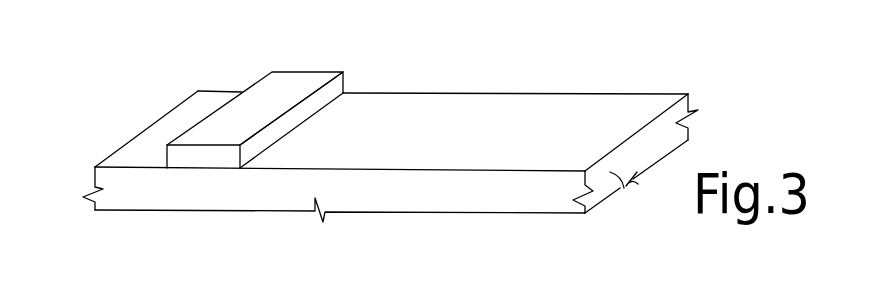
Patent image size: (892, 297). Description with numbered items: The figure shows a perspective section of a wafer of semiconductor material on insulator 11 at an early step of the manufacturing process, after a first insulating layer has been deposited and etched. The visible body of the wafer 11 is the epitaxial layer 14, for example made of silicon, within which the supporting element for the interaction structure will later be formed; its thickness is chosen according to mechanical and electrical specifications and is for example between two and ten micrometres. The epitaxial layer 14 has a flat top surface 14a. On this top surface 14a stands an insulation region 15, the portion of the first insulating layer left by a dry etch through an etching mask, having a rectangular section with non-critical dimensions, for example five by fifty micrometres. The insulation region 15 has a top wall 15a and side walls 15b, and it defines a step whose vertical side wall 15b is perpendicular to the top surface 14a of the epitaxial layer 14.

The wafer of semiconductor material on insulator 11 is at (700, 104).
The epitaxial layer 14 is at (375, 156).
The top surface of the epitaxial layer 14a is at (141, 155).
The insulation region 15 is at (344, 71).
The top wall 15a is at (267, 103).
The side wall 15b is at (303, 111).